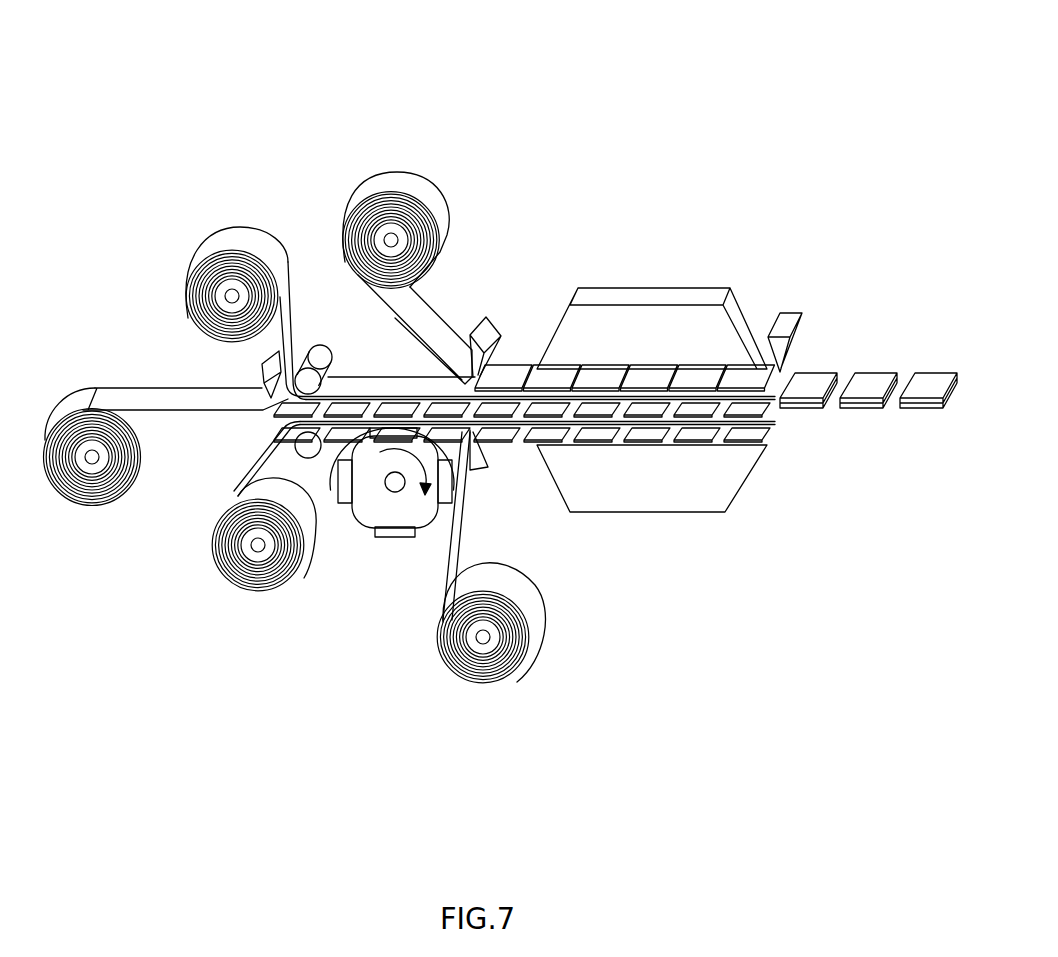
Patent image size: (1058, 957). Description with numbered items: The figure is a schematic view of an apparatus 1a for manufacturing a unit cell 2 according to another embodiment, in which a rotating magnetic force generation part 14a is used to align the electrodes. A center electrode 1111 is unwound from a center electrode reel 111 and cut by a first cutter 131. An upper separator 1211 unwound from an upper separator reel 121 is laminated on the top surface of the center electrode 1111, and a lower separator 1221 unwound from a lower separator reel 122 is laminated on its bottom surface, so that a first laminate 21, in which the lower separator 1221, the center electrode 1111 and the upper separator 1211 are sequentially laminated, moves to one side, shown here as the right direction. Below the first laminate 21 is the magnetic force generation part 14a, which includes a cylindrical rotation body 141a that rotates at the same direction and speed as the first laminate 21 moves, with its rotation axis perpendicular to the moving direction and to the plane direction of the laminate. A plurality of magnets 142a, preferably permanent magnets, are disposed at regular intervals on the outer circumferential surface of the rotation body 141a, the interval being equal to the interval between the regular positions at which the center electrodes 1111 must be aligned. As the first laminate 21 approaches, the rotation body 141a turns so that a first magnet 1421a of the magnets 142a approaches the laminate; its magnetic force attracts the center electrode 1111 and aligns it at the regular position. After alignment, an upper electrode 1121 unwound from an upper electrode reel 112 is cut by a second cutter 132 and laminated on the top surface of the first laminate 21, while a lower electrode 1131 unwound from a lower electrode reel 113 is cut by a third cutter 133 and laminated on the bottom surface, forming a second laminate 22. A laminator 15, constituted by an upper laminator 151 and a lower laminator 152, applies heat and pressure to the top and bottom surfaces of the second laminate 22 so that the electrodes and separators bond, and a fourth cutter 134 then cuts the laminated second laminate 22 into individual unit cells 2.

The apparatus for manufacturing a unit cell 1a is at (554, 86).
The unit cell 2 is at (927, 412).
The magnetic force generation part 14a is at (378, 572).
The laminator 15 is at (728, 222).
The first laminate 21 is at (381, 372).
The second laminate 22 is at (531, 361).
The center electrode reel 111 is at (90, 400).
The upper electrode reel 112 is at (397, 183).
The lower electrode reel 113 is at (482, 683).
The upper separator reel 121 is at (244, 236).
The lower separator reel 122 is at (217, 570).
The first cutter 131 is at (262, 372).
The second cutter 132 is at (491, 332).
The third cutter 133 is at (478, 467).
The fourth cutter 134 is at (788, 322).
The rotation body 141a is at (378, 538).
The magnets 142a is at (393, 505).
The upper laminator 151 is at (641, 297).
The lower laminator 152 is at (664, 467).
The center electrode 1111 is at (165, 398).
The upper electrode 1121 is at (427, 318).
The lower electrode 1131 is at (457, 527).
The upper separator 1211 is at (290, 327).
The lower separator 1221 is at (257, 477).
The first magnet 1421a is at (352, 438).